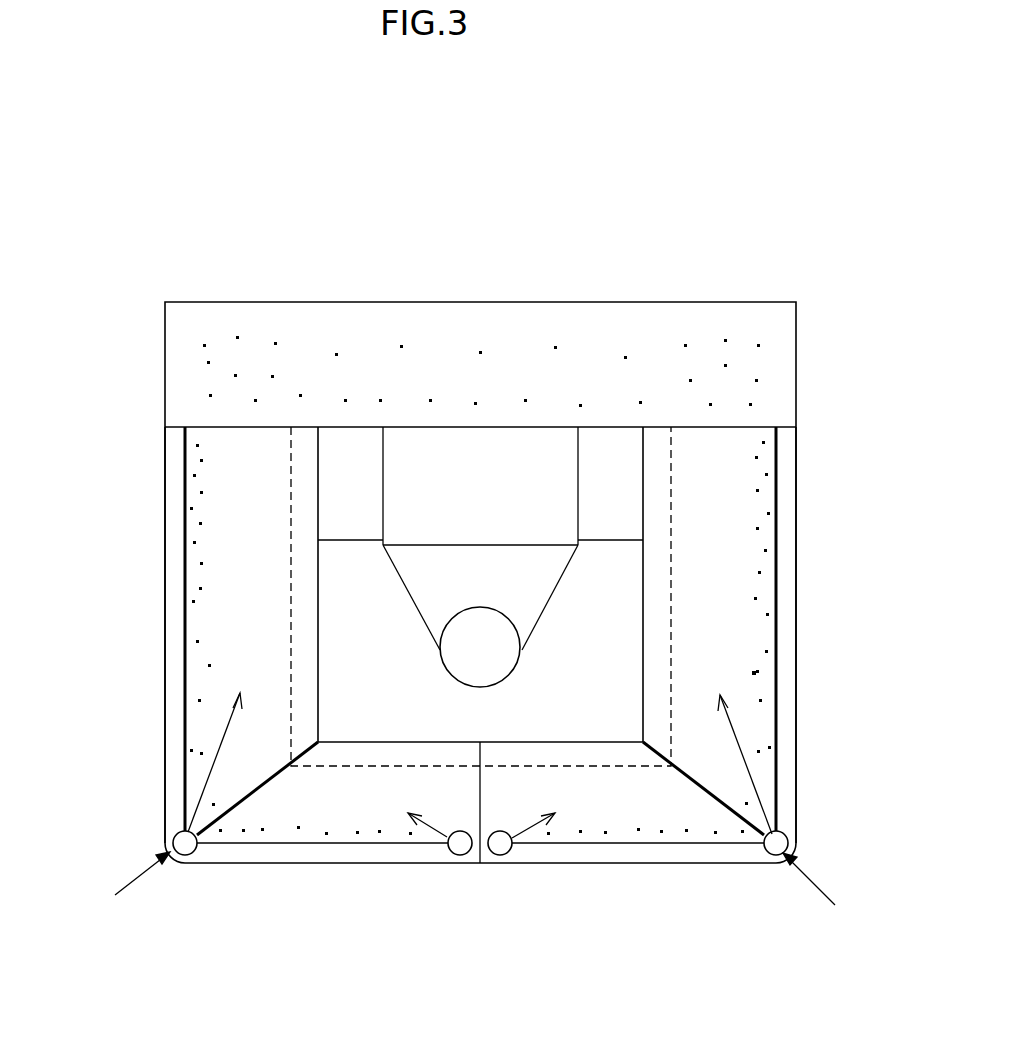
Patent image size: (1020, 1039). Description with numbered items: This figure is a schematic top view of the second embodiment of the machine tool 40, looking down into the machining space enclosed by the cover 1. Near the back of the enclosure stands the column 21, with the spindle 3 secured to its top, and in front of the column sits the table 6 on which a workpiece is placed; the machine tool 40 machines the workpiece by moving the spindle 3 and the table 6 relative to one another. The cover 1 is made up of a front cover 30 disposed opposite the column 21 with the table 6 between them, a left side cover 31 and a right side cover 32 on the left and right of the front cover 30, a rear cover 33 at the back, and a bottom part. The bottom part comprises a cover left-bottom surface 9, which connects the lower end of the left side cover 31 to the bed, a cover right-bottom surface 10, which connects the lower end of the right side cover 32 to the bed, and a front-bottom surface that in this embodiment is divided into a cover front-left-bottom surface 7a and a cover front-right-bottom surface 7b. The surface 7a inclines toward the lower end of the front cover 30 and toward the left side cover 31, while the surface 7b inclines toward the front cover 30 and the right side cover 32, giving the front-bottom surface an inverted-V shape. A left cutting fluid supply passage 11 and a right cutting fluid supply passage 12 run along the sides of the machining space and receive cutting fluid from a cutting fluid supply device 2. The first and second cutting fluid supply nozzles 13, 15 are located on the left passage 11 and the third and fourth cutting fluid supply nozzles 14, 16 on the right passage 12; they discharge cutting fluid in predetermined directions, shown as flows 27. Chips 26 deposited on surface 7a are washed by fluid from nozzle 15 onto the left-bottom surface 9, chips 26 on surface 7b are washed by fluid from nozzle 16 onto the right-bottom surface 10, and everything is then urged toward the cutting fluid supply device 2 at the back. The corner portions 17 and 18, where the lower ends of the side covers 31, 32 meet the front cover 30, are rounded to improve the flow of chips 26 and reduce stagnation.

The machine tool 40 is at (290, 114).
The cover 1 is at (797, 460).
The cutting fluid supply device 2 is at (377, 302).
The spindle 3 is at (497, 640).
The table 6 is at (347, 577).
The cover front-left-bottom surface 7a is at (322, 819).
The cover front-right-bottom surface 7b is at (653, 806).
The cover left-bottom surface 9 is at (240, 573).
The cover right-bottom surface 10 is at (720, 628).
The left cutting fluid supply passage 11 is at (183, 472).
The right cutting fluid supply passage 12 is at (777, 532).
The first cutting fluid supply nozzle 13 is at (173, 838).
The third cutting fluid supply nozzle 14 is at (789, 843).
The second cutting fluid supply nozzle 15 is at (455, 855).
The fourth cutting fluid supply nozzle 16 is at (503, 855).
The corner portion 17 is at (125, 888).
The corner portion 18 is at (826, 894).
The column 21 is at (488, 452).
The chips 26 is at (752, 673).
The flows of the cutting fluid 27 is at (230, 720).
The front cover 30 is at (662, 862).
The left side cover 31 is at (162, 653).
The right side cover 32 is at (797, 755).
The rear cover 33 is at (340, 427).